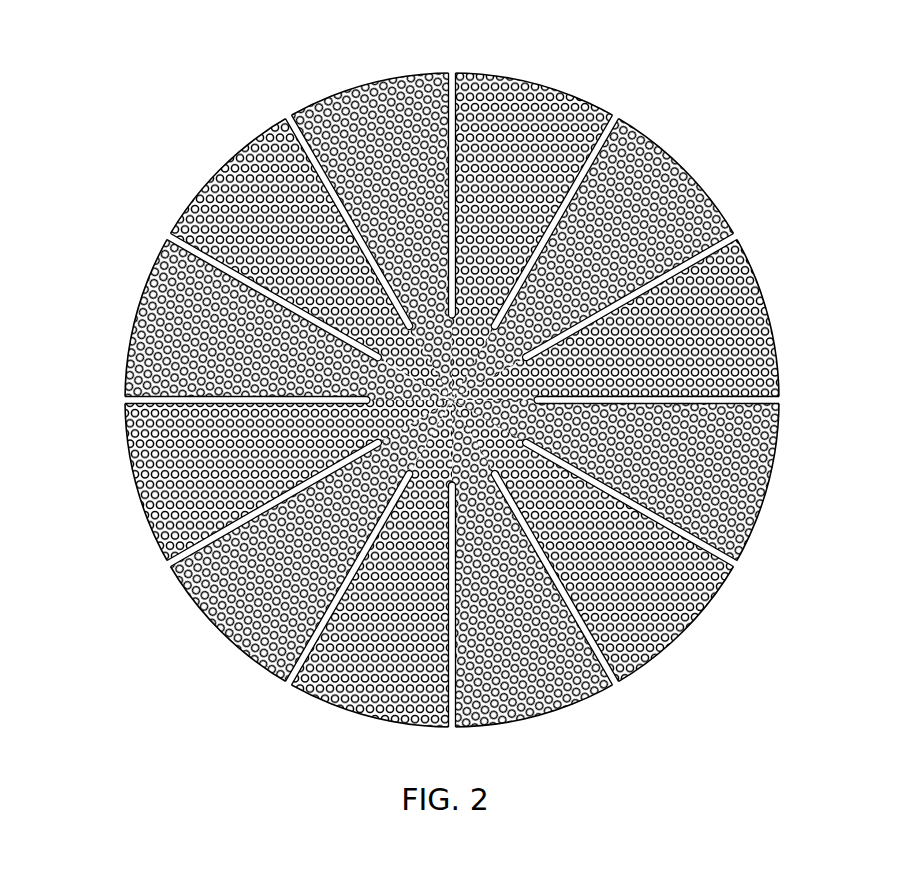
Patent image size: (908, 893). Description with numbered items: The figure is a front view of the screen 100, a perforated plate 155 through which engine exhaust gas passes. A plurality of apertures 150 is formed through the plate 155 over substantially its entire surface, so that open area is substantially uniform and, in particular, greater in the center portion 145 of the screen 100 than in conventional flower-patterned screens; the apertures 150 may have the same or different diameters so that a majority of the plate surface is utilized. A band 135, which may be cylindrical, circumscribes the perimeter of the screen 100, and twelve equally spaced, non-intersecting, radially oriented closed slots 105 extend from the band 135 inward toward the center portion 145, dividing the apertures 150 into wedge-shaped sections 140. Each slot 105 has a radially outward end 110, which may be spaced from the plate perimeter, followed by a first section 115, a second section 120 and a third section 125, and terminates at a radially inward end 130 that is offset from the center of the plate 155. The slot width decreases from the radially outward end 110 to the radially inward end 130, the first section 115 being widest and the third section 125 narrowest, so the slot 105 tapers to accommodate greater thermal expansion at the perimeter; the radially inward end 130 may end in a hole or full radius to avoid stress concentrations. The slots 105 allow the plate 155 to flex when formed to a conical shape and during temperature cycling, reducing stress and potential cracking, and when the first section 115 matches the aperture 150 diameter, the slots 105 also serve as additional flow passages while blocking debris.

The screen 100 is at (490, 397).
The closed slots 105 is at (580, 687).
The radially outward end 110 is at (617, 683).
The first section 115 is at (613, 647).
The second section 120 is at (580, 608).
The third section 125 is at (700, 568).
The radially inward end 130 is at (497, 466).
The band 135 is at (703, 188).
The sections 140 is at (748, 242).
The center portion 145 is at (430, 420).
The apertures 150 is at (520, 128).
The plate 155 is at (313, 110).